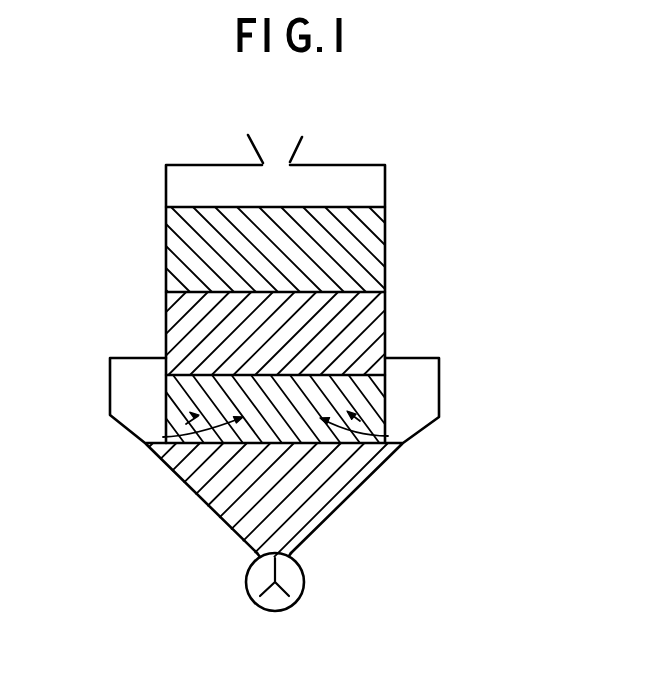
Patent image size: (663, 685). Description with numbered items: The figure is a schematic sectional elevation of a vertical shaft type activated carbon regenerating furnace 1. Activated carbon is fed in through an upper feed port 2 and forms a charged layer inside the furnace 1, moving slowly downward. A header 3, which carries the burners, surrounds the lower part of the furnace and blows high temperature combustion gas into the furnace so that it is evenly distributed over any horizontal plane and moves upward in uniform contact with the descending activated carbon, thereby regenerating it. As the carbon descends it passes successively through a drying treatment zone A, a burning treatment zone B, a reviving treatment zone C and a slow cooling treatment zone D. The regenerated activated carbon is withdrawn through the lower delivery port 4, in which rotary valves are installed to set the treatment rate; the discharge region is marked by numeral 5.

The furnace 1 is at (401, 168).
The upper feed port 2 is at (273, 147).
The header 3 is at (135, 388).
The lower delivery port 4 is at (273, 605).
The discharge outlet 5 is at (294, 577).